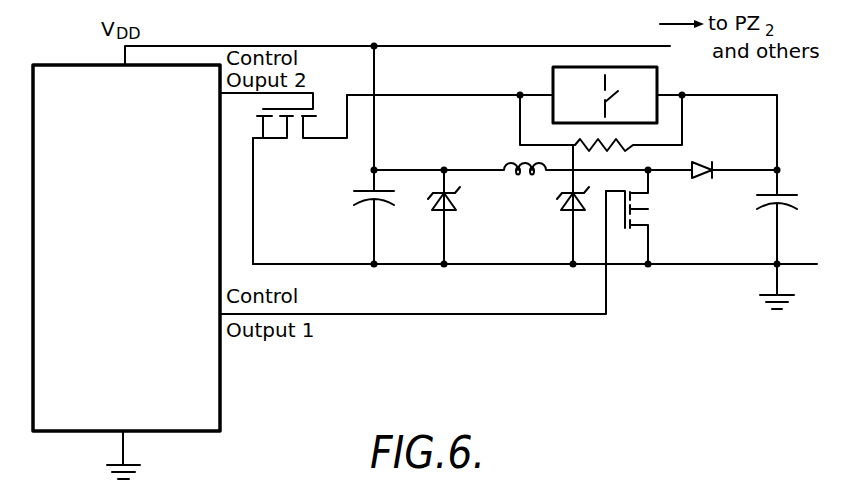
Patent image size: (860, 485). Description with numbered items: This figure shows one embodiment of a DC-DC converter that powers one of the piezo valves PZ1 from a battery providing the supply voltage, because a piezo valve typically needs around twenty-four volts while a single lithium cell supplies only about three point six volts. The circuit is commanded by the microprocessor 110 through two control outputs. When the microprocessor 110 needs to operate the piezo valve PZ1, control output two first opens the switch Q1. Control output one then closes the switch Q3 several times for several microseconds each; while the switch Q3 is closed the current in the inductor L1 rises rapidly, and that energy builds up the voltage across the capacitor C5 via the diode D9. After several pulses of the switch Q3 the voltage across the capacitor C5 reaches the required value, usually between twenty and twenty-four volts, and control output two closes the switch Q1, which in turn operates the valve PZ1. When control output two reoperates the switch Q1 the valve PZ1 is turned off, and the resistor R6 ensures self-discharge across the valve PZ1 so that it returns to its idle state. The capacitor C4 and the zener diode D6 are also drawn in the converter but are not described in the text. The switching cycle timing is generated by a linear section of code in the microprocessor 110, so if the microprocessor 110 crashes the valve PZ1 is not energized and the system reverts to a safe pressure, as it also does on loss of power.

The microprocessor 110 is at (126, 272).
The switch Q1 is at (300, 134).
The switch Q3 is at (644, 217).
The capacitor C4 is at (380, 217).
The capacitor C5 is at (792, 217).
The zener diode D6 is at (456, 217).
The diode D9 is at (712, 157).
The inductor L1 is at (526, 184).
The resistor R6 is at (601, 132).
The piezo valve PZ1 is at (627, 95).